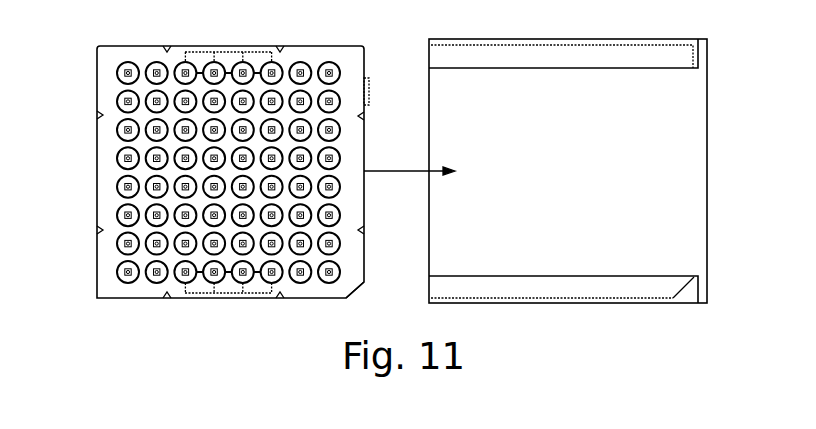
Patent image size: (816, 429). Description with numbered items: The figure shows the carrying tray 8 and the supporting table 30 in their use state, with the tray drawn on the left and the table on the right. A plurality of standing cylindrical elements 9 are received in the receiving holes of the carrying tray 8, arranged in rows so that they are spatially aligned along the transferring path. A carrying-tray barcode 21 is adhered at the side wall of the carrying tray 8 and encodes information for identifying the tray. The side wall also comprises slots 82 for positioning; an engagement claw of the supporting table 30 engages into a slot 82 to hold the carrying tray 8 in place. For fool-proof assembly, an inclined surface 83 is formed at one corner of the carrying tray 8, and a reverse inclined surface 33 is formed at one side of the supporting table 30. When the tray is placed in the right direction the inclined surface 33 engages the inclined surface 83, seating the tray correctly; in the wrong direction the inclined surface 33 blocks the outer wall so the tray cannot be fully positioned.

The carrying tray 8 is at (97, 90).
The cylindrical element 9 is at (127, 61).
The slot 82 is at (167, 45).
The carrying-tray barcode 21 is at (369, 93).
The inclined surface 83 is at (358, 297).
The supporting table 30 is at (707, 117).
The reverse inclined surface 33 is at (680, 290).